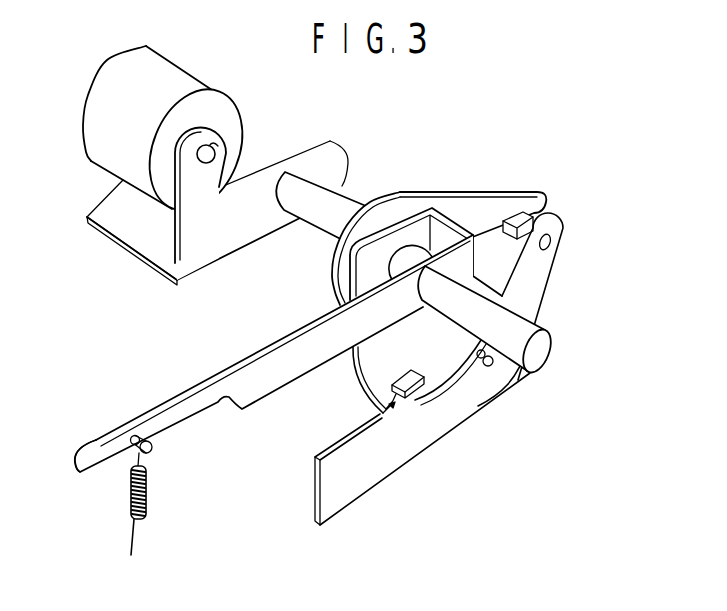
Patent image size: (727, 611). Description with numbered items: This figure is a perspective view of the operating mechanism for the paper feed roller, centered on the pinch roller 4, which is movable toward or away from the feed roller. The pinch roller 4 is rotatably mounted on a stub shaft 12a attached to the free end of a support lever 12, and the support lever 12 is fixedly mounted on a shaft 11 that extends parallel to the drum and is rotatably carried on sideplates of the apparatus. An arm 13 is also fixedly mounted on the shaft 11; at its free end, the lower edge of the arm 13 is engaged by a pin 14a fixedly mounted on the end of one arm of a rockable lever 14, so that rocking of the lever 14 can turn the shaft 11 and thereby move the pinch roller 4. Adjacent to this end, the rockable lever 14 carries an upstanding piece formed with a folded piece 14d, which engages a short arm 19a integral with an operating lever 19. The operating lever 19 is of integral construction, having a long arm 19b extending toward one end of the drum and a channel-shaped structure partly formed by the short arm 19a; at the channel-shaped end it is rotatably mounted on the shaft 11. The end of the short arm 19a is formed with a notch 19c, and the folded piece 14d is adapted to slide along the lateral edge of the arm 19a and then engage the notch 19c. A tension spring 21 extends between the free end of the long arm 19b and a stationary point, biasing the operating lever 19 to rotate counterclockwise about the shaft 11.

The pinch roller 4 is at (203, 84).
The shaft 11 is at (311, 220).
The support lever 12 is at (225, 252).
The stub shaft 12a is at (213, 147).
The arm 13 is at (485, 191).
The rockable lever 14 is at (480, 403).
The pin 14a is at (548, 218).
The folded piece 14d is at (416, 370).
The operating lever 19 is at (268, 402).
The short arm 19a is at (370, 368).
The long arm 19b is at (168, 408).
The notch 19c is at (396, 402).
The tension spring 21 is at (147, 490).